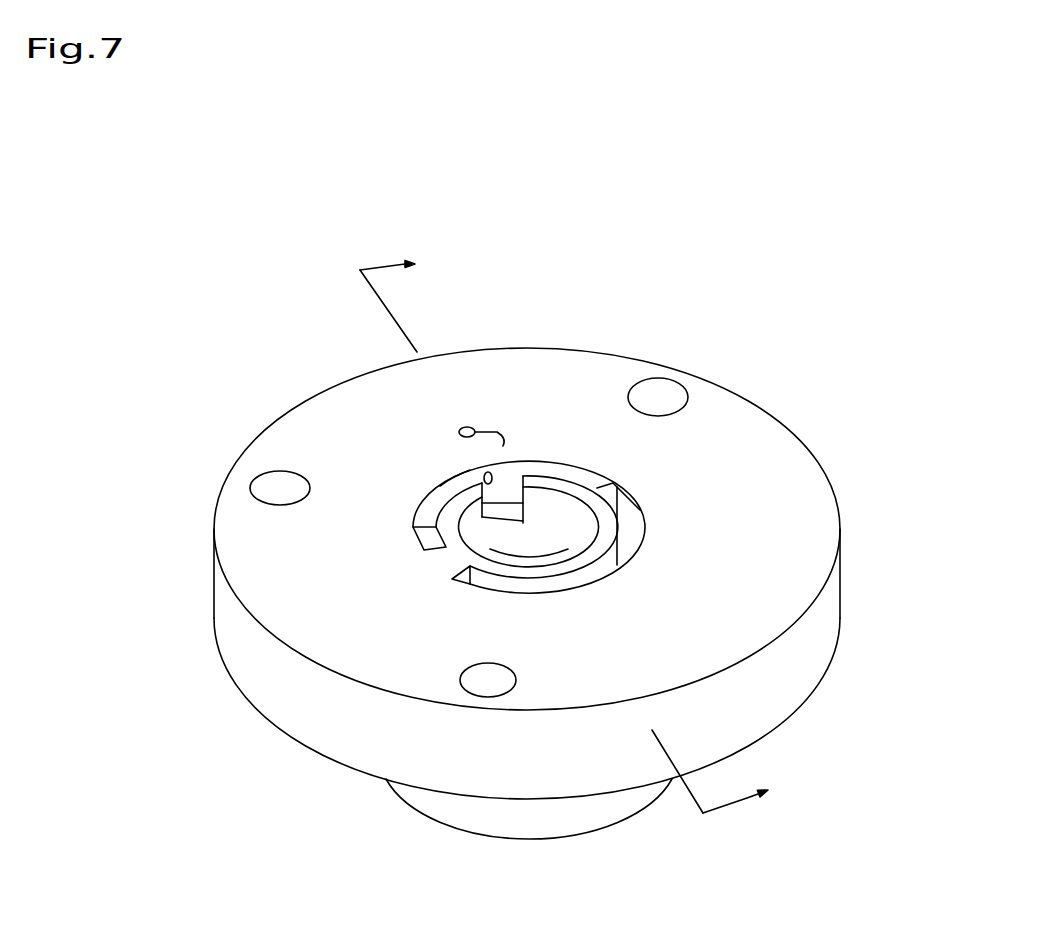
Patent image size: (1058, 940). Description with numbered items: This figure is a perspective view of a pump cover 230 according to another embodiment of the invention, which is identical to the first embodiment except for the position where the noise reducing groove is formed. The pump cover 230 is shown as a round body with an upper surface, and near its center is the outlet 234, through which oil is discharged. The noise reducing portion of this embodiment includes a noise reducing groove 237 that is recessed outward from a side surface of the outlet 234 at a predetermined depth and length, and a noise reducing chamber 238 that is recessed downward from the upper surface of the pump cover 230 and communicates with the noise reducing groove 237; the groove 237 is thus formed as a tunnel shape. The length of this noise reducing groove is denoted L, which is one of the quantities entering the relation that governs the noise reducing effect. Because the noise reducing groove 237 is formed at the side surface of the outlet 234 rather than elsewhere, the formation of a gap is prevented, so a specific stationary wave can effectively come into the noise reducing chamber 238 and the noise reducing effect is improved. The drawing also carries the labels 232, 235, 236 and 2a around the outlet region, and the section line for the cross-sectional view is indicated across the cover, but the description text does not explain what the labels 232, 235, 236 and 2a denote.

The pump cover 230 is at (831, 376).
The hub boss 232 is at (594, 416).
The outlet 234 is at (430, 532).
The key slot 235 is at (514, 500).
The shaft hole 236 is at (556, 522).
The noise reducing groove 237 is at (460, 503).
The noise reducing chamber 238 is at (467, 426).
The hole 2a is at (455, 482).
The length of the noise reducing groove L is at (508, 456).